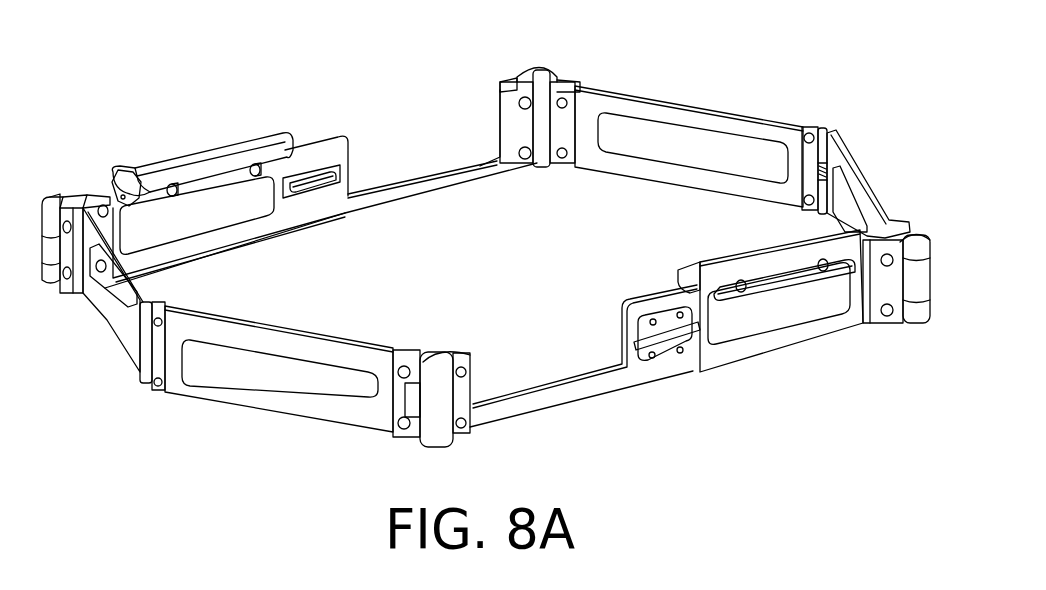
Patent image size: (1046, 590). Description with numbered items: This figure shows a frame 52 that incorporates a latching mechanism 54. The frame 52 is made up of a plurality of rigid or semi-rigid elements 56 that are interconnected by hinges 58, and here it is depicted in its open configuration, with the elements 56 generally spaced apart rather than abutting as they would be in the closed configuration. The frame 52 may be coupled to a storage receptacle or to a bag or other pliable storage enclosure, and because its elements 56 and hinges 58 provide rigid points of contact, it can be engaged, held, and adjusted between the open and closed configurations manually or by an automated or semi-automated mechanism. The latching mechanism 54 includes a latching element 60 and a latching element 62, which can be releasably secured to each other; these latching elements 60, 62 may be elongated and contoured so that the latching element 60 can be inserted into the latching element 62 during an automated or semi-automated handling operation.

The frame 52 is at (656, 50).
The latching mechanism 54 is at (668, 320).
The rigid or semi-rigid elements 56 is at (313, 150).
The hinges 58 is at (60, 195).
The latching element 60 is at (315, 197).
The latching element 62 is at (633, 342).